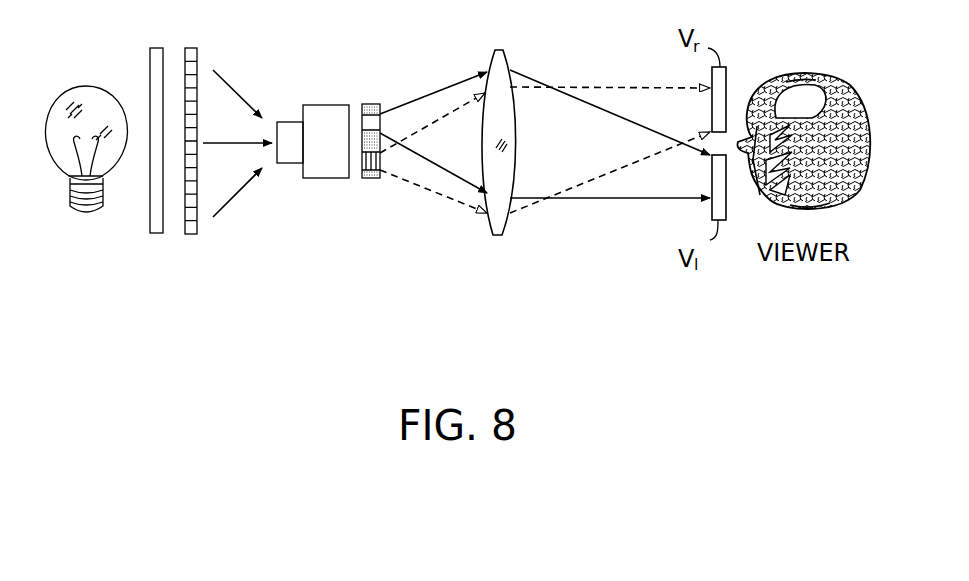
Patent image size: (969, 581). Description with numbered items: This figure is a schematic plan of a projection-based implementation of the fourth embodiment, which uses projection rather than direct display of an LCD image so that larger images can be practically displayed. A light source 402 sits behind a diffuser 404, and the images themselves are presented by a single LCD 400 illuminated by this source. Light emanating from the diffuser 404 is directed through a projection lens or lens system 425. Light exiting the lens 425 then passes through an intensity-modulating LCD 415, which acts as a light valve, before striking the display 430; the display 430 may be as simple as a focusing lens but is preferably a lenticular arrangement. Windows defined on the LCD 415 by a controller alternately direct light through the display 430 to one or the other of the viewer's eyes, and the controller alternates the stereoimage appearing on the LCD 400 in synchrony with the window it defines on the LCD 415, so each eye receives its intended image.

The light source 402 is at (84, 213).
The diffuser 404 is at (157, 233).
The LCD 400 is at (191, 234).
The projection lens or lens system 425 is at (320, 105).
The intensity-modulating LCD 415 is at (370, 178).
The display 430 is at (496, 235).